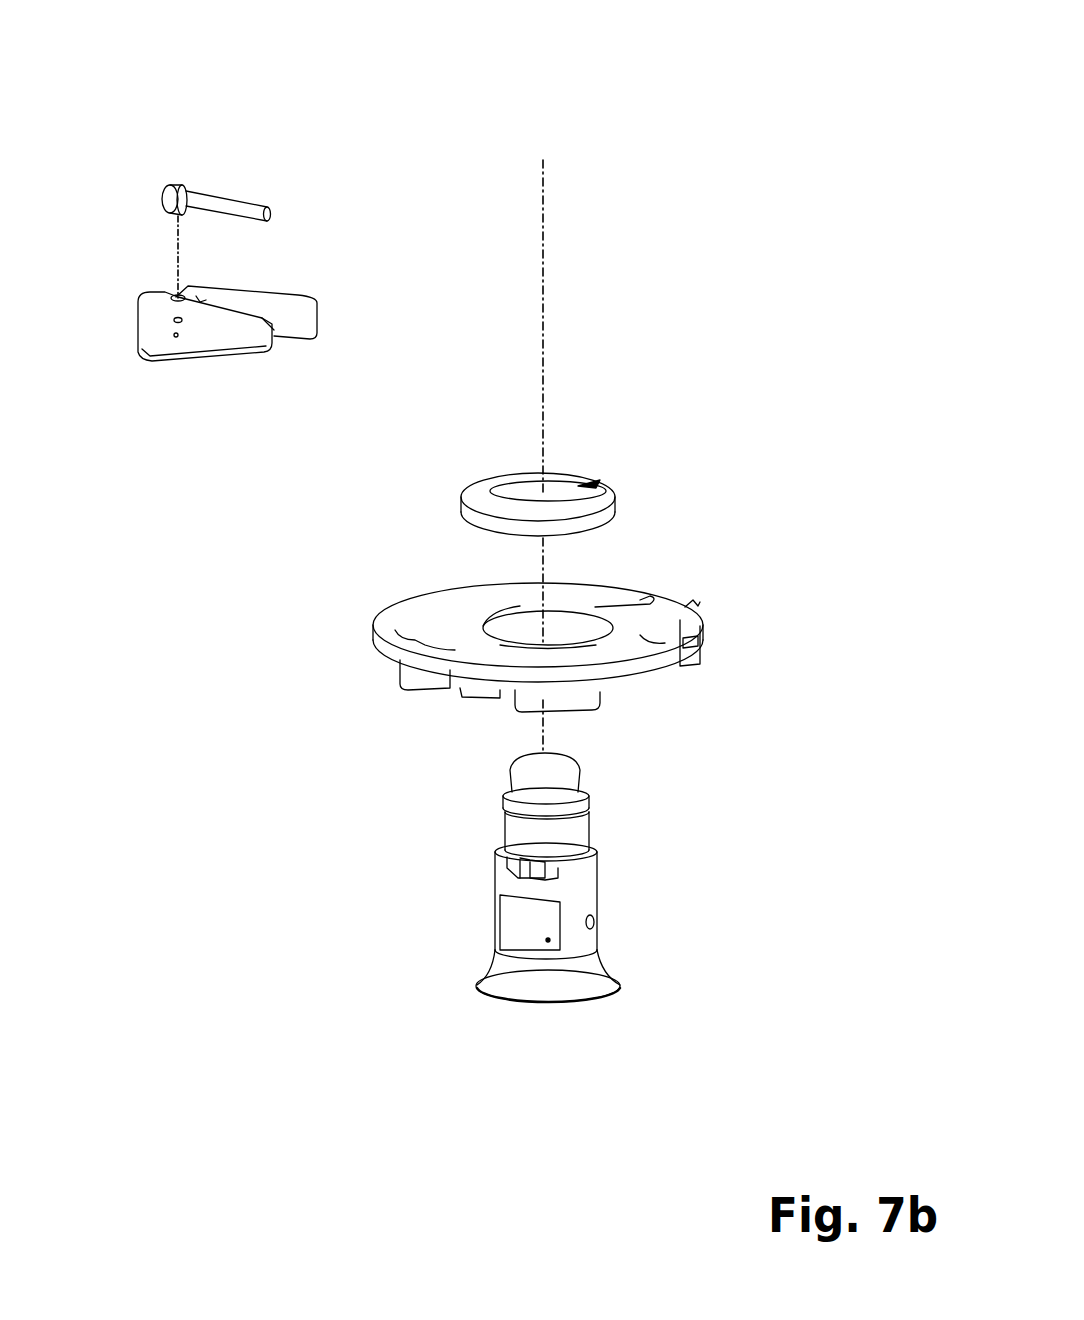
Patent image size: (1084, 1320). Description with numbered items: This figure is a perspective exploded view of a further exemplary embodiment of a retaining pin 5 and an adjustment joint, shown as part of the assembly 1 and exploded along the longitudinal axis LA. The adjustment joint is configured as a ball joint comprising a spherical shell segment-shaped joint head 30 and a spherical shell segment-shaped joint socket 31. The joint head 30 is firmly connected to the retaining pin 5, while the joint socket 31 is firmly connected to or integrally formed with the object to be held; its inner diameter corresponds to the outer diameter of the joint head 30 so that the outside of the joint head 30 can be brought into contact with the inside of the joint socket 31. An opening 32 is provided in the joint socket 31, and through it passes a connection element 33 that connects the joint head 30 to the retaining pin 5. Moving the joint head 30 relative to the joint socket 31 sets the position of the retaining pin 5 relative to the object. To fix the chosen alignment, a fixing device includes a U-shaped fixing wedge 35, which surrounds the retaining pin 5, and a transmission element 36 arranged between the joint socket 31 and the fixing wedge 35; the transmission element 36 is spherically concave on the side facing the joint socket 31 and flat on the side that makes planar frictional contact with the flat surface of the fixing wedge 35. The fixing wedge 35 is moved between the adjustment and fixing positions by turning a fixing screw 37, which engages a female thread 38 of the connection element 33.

The cleaning device 1 is at (168, 137).
The longitudinal axis LA is at (544, 185).
The fixing screw 37 is at (232, 210).
The fixing wedge 35 is at (213, 336).
The transmission element 36 is at (597, 500).
The joint socket 31 is at (520, 621).
The opening 32 is at (565, 627).
The retaining pin 5 is at (583, 807).
The connection element 33 is at (625, 901).
The female thread 38 is at (596, 918).
The joint head 30 is at (509, 985).